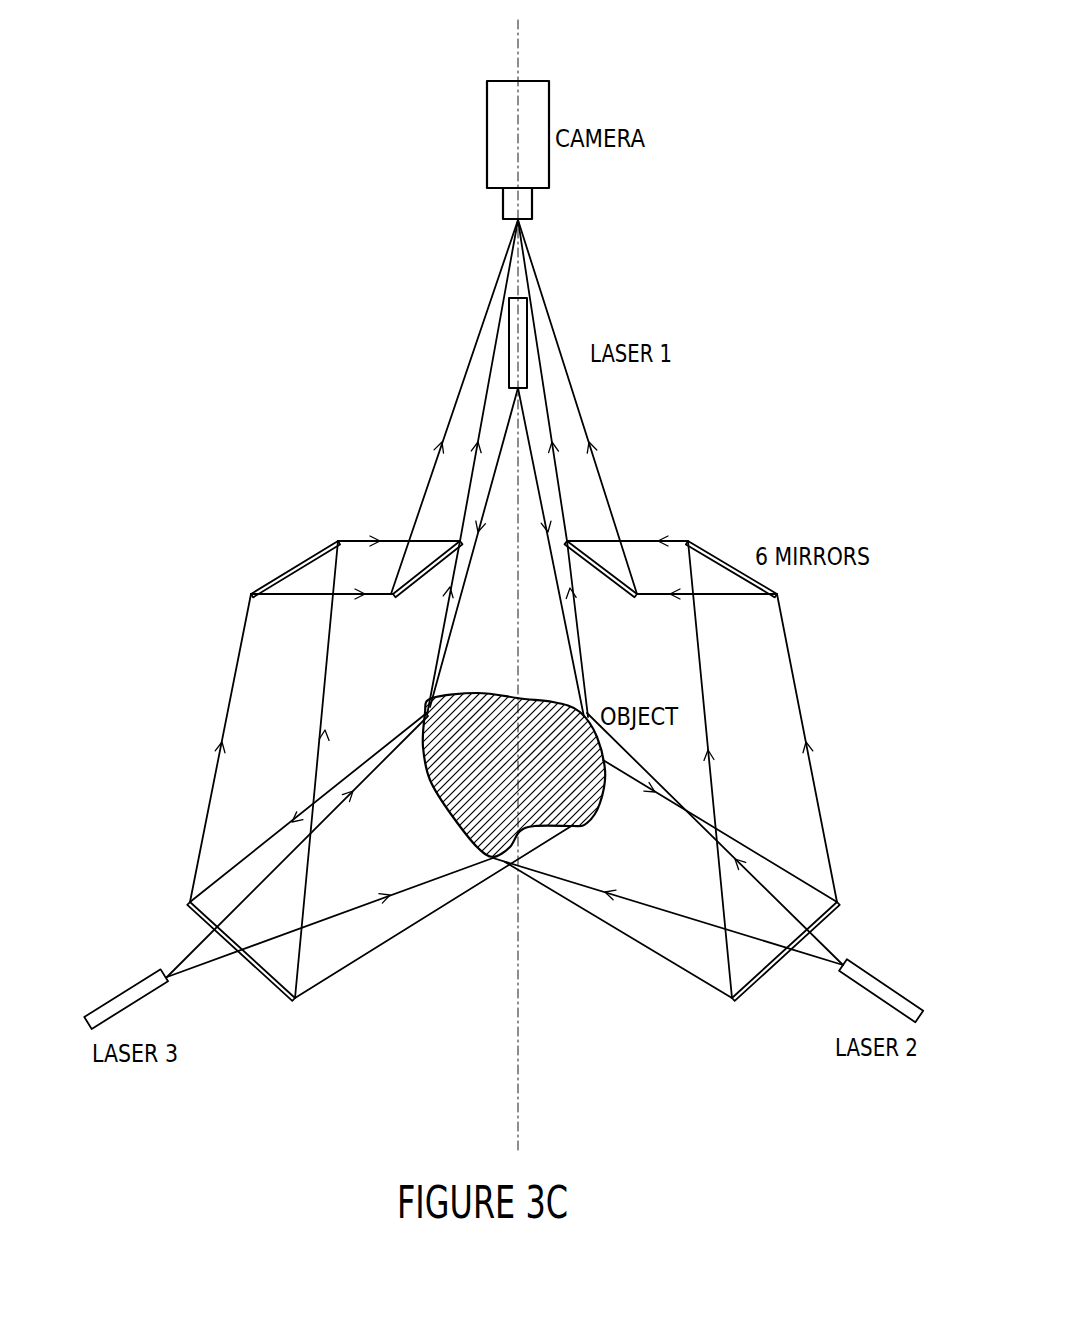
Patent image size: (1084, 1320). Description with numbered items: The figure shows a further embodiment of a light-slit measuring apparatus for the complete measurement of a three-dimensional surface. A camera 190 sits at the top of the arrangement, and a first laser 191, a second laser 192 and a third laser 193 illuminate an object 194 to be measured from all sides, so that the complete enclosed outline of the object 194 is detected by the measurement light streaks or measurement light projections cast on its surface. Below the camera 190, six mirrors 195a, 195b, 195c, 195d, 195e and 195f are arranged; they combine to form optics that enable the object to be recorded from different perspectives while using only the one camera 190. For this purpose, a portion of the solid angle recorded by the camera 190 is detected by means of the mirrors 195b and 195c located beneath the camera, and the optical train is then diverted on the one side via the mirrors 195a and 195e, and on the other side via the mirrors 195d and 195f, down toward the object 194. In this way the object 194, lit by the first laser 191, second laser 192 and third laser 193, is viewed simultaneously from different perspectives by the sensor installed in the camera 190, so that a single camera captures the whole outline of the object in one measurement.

The camera 190 is at (550, 108).
The first laser 191 is at (528, 322).
The second laser 192 is at (880, 978).
The third laser 193 is at (150, 975).
The object 194 is at (533, 827).
The mirror 195a is at (292, 566).
The mirror 195b is at (398, 598).
The mirror 195c is at (595, 541).
The mirror 195d is at (737, 567).
The mirror 195e is at (262, 962).
The mirror 195f is at (768, 972).